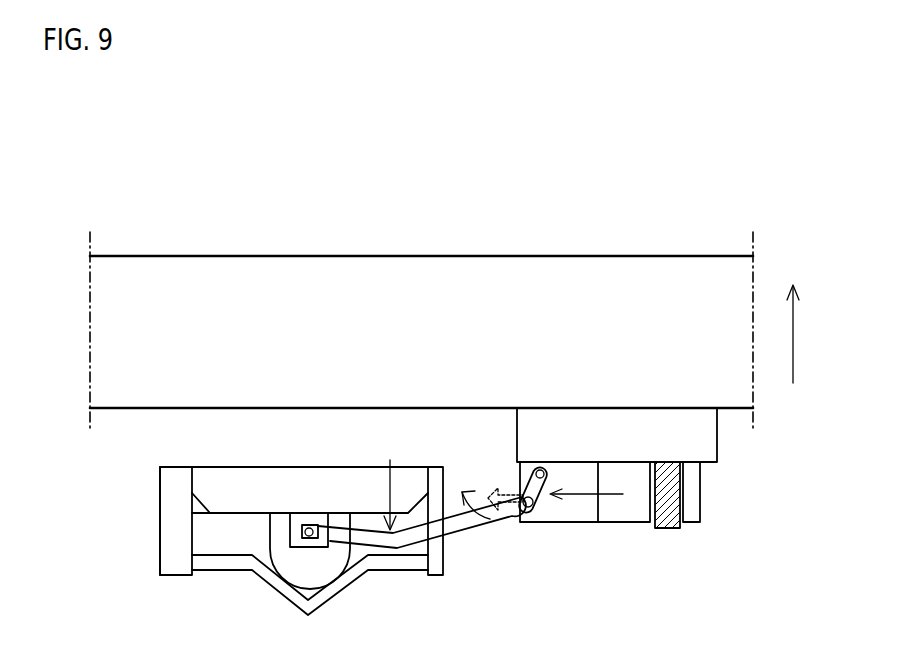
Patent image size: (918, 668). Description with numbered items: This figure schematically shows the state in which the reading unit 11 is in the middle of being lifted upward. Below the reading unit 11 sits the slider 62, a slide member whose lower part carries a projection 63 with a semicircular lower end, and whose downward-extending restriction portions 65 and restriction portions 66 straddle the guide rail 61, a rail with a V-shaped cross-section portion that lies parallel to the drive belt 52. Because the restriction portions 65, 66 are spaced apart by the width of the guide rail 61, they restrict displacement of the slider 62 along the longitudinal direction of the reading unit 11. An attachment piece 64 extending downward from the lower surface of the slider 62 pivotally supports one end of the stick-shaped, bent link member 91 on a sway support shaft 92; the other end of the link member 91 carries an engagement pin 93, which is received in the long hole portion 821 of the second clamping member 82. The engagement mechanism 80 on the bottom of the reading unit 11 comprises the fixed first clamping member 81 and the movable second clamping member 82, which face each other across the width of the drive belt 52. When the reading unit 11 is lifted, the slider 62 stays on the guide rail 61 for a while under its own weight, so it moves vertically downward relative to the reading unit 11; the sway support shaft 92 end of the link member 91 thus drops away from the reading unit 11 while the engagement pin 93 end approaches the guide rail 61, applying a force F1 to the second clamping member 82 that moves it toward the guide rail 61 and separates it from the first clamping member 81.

The reading unit 11 is at (625, 256).
The drive belt 52 is at (667, 528).
The guide rail 61 is at (266, 583).
The slider 62 is at (268, 517).
The projection 63 is at (298, 590).
The attachment piece 64 is at (290, 537).
The restriction portion 65 is at (160, 557).
The restriction portion 66 is at (430, 467).
The engagement mechanism 80 is at (695, 545).
The first clamping member 81 is at (699, 522).
The second clamping member 82 is at (618, 522).
The long hole portion 821 is at (540, 467).
The link member 91 is at (445, 535).
The sway support shaft 92 is at (306, 527).
The engagement pin 93 is at (522, 518).
The force F1 is at (492, 489).